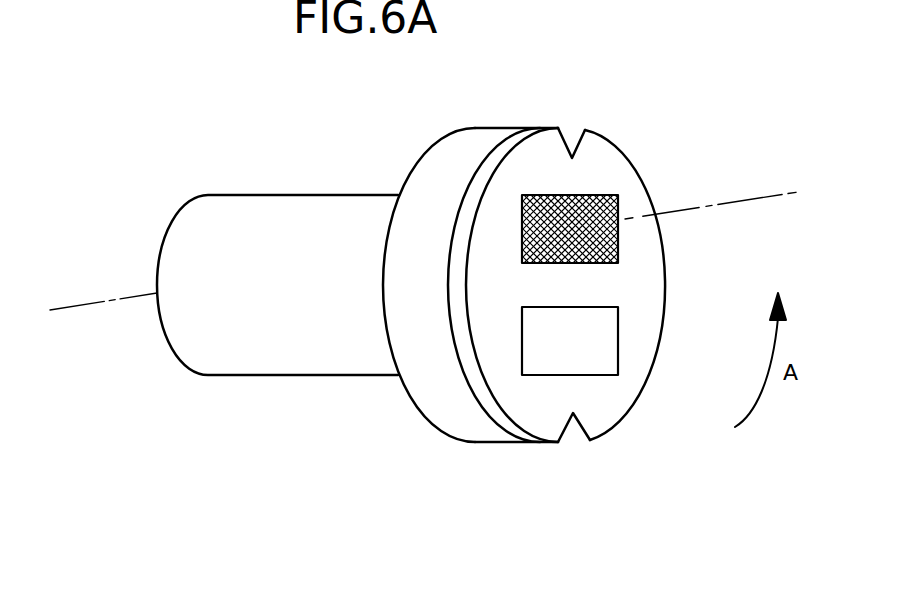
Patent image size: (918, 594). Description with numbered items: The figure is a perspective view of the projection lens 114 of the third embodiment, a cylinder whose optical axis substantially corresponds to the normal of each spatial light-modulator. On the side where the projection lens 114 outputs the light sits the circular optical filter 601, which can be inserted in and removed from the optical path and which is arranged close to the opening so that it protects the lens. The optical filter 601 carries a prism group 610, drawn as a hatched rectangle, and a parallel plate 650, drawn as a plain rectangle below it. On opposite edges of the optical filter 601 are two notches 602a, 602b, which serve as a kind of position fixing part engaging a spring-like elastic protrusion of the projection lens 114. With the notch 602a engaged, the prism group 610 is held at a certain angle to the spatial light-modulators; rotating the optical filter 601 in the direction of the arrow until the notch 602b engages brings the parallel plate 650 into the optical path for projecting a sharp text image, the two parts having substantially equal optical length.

The projection lens 114 is at (283, 195).
The optical filter 601 is at (510, 145).
The notch 602a is at (567, 129).
The notch 602b is at (574, 425).
The prism group 610 is at (606, 252).
The parallel plate 650 is at (606, 341).